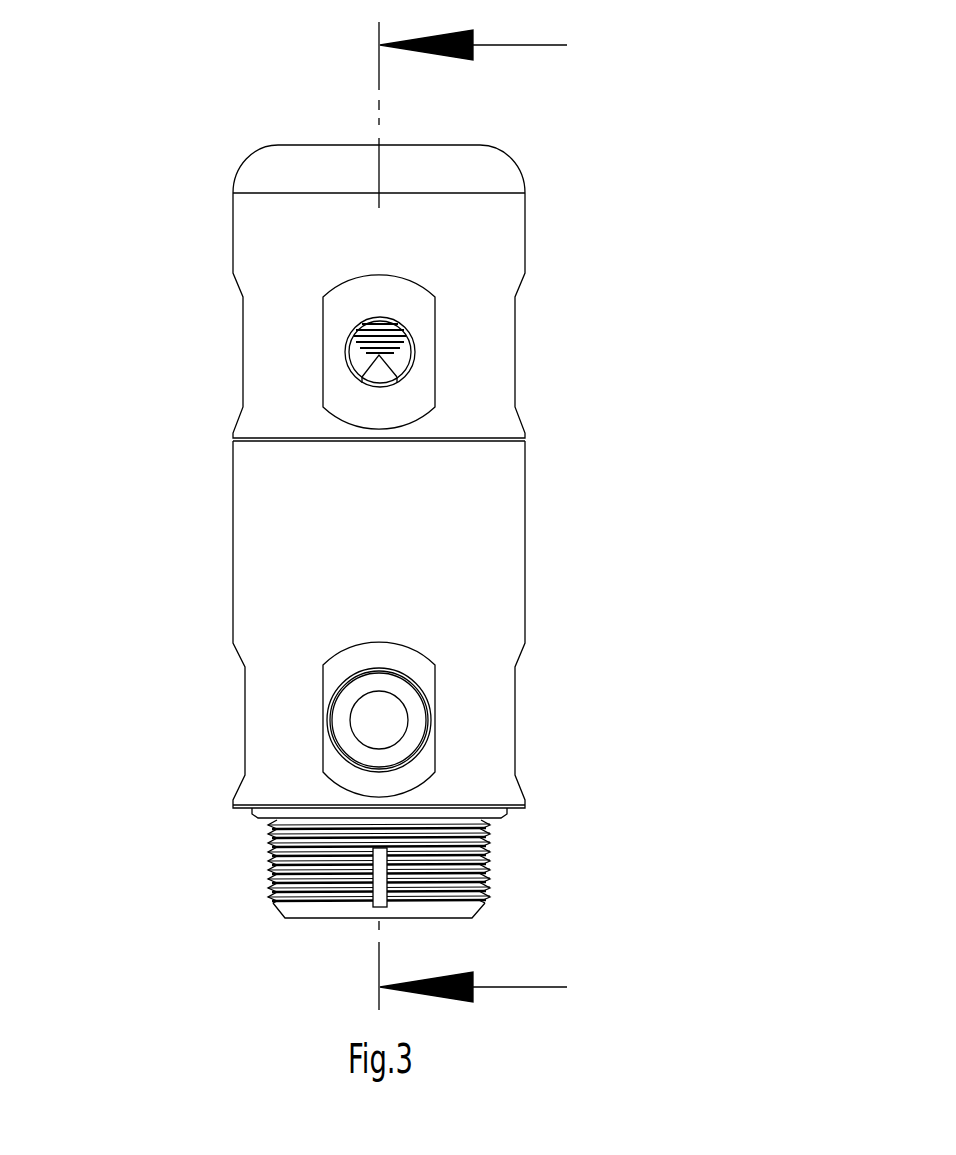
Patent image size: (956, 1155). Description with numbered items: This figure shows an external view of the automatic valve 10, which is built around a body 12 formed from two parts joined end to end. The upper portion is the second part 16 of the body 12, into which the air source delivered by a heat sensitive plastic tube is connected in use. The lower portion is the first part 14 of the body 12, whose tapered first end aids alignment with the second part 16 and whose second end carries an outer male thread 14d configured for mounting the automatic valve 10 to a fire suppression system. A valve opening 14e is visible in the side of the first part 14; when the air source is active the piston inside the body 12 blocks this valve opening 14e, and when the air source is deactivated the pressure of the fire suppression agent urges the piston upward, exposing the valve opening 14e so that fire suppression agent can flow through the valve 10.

The automatic valve 10 is at (373, 516).
The body 12 is at (373, 531).
The first part 14 is at (461, 679).
The outer male thread 14d is at (433, 863).
The valve opening 14e is at (379, 720).
The second part 16 is at (472, 270).